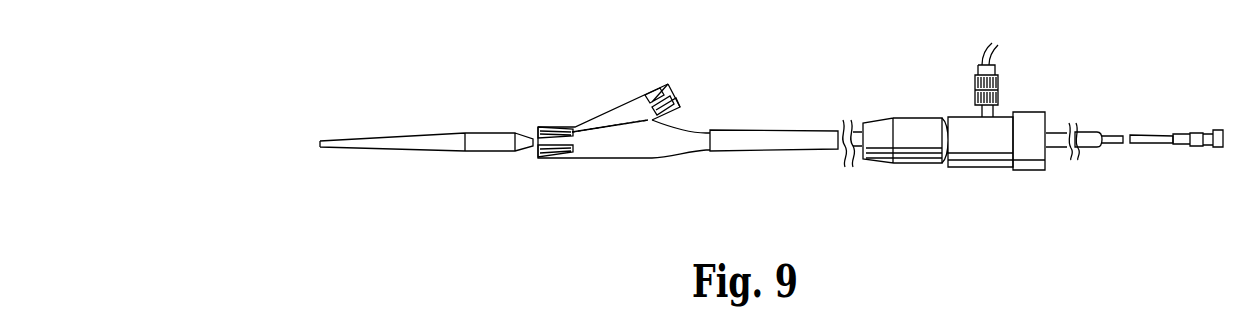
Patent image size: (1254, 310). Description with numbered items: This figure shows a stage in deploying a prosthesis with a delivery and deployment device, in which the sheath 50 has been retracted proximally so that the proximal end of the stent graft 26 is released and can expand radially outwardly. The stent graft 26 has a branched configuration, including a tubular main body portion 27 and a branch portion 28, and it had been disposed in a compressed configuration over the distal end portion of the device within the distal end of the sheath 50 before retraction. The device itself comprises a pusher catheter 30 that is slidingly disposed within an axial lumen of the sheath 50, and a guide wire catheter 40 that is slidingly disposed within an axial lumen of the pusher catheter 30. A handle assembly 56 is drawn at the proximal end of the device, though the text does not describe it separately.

The stent graft 26 is at (582, 153).
The tubular main body portion 27 is at (648, 147).
The branch portion 28 is at (643, 100).
The pusher catheter 30 is at (1082, 132).
The guide wire catheter 40 is at (1117, 145).
The sheath 50 is at (760, 132).
The handle assembly 56 is at (915, 102).